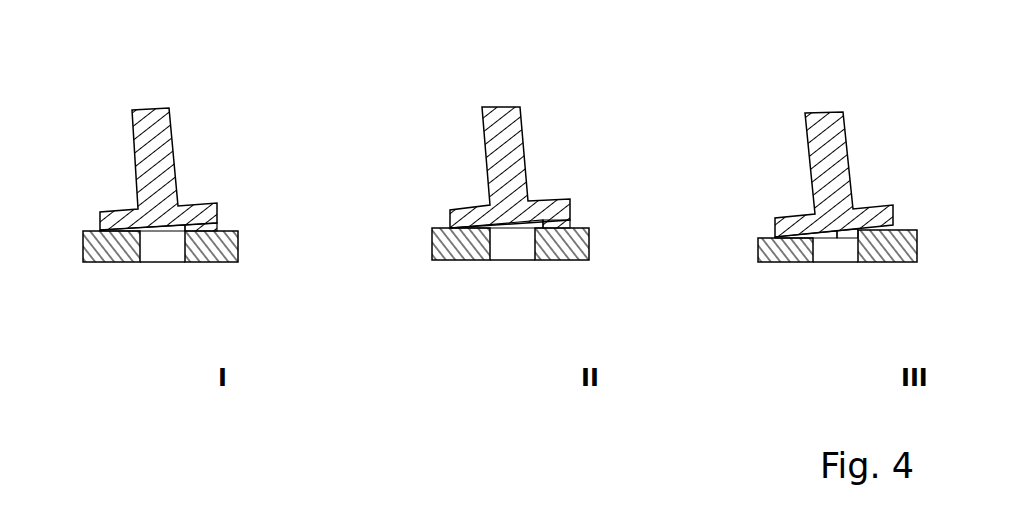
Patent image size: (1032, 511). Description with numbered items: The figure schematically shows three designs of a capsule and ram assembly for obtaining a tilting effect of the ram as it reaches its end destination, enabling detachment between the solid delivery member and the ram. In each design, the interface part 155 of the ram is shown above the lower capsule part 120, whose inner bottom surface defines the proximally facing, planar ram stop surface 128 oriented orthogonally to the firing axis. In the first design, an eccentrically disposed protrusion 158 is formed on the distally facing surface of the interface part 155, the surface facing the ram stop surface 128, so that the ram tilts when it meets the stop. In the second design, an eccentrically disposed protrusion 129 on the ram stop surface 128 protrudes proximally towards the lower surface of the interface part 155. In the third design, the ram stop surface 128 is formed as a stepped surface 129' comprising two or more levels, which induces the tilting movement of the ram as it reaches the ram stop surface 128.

The interface part 155 is at (469, 162).
The ram stop surface 128 is at (428, 208).
The eccentrically disposed protrusion 158 is at (246, 228).
The eccentrically disposed protrusion 129 is at (593, 261).
The stepped surface 129' is at (881, 273).
The lower capsule part 120 is at (474, 278).